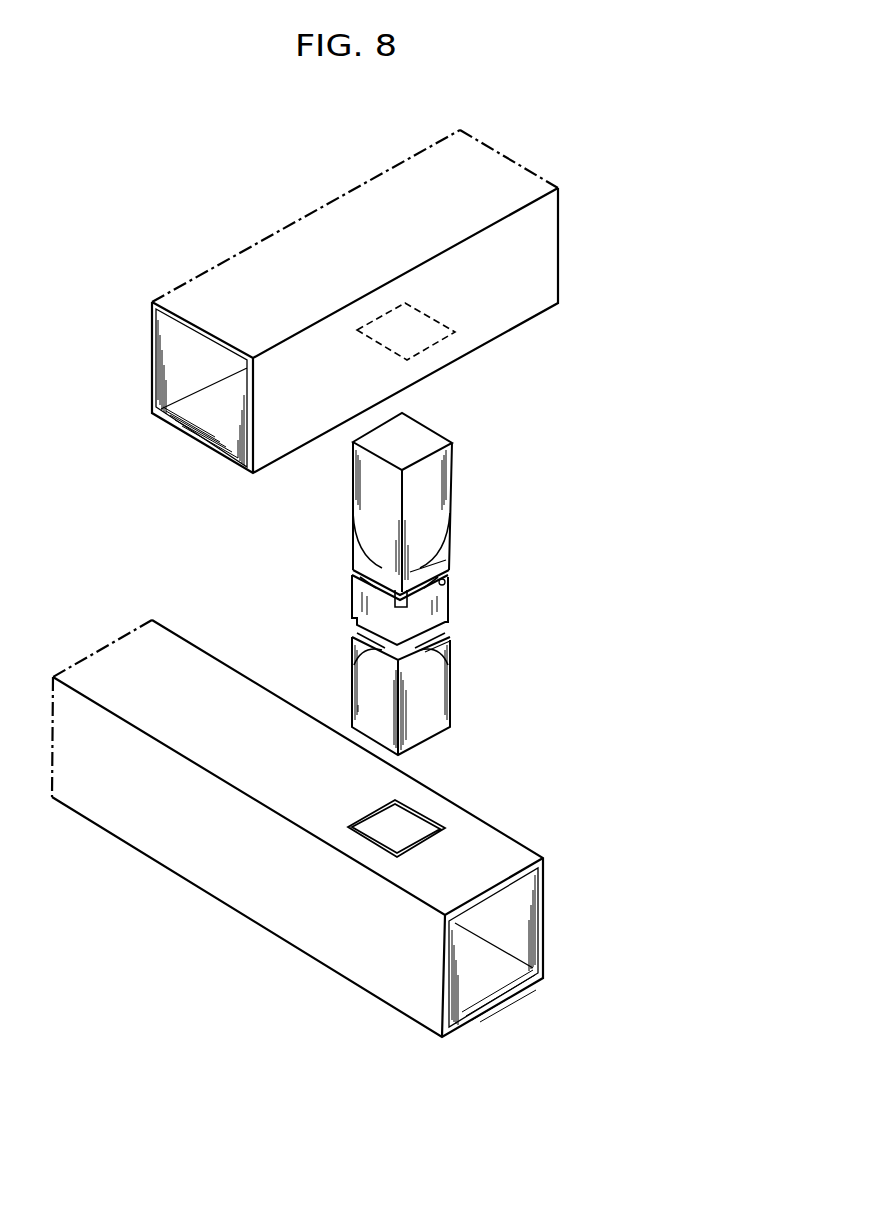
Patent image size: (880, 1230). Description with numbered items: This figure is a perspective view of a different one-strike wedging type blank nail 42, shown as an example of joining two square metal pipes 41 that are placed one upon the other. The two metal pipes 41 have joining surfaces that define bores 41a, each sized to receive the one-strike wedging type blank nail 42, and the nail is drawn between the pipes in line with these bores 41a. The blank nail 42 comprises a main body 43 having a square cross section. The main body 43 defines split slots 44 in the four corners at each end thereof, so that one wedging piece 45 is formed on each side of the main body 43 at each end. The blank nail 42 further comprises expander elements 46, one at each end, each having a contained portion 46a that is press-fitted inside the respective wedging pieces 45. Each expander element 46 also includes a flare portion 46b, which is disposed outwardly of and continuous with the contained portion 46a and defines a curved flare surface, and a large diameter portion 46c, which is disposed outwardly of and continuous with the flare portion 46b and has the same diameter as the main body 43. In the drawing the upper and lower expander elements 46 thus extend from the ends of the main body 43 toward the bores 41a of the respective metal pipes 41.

The square metal pipe 41 is at (208, 263).
The bore 41a is at (433, 320).
The one-strike wedging type blank nail 42 is at (492, 535).
The main body 43 is at (452, 600).
The split slot 44 is at (360, 576).
The wedging piece 45 is at (447, 566).
The expander element 46 is at (452, 448).
The contained portion 46a is at (450, 492).
The flare portion 46b is at (353, 512).
The large diameter portion 46c is at (353, 457).